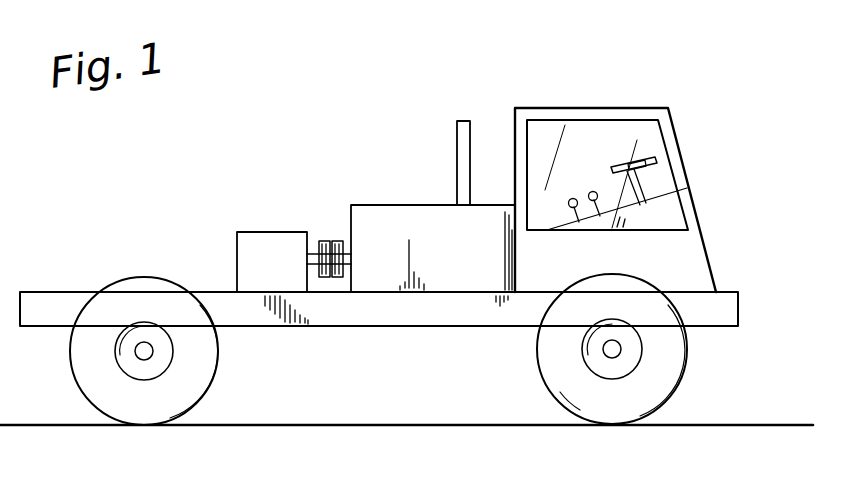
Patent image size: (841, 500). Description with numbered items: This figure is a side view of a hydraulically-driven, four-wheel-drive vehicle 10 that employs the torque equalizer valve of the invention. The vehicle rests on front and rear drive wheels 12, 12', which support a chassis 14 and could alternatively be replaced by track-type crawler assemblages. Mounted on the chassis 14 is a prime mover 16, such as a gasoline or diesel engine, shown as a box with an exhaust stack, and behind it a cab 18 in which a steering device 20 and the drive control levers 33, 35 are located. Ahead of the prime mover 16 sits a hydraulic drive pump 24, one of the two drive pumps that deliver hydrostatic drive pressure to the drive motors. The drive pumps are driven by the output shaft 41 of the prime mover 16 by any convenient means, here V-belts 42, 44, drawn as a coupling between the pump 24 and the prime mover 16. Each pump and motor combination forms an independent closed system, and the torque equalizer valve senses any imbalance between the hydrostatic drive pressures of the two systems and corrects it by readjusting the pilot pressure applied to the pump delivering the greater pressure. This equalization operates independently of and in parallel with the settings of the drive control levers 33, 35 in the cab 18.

The vehicle 10 is at (346, 122).
The front drive wheel 12 is at (638, 349).
The rear drive wheel 12' is at (170, 351).
The chassis 14 is at (739, 305).
The prime mover 16 is at (450, 249).
The cab 18 is at (672, 128).
The steering device 20 is at (646, 186).
The rear hydraulic drive pump 24 is at (292, 267).
The drive control lever 33 is at (591, 201).
The drive control lever 35 is at (566, 209).
The output shaft 41 is at (351, 260).
The V-belt 42 is at (321, 240).
The V-belt 44 is at (338, 240).